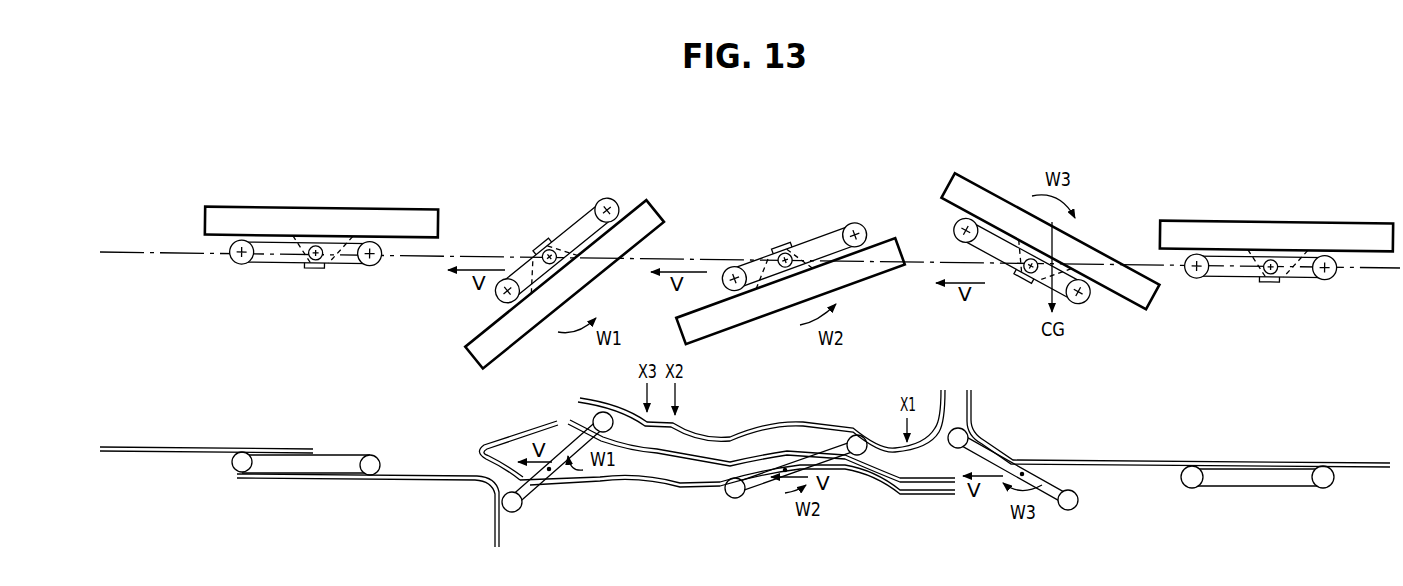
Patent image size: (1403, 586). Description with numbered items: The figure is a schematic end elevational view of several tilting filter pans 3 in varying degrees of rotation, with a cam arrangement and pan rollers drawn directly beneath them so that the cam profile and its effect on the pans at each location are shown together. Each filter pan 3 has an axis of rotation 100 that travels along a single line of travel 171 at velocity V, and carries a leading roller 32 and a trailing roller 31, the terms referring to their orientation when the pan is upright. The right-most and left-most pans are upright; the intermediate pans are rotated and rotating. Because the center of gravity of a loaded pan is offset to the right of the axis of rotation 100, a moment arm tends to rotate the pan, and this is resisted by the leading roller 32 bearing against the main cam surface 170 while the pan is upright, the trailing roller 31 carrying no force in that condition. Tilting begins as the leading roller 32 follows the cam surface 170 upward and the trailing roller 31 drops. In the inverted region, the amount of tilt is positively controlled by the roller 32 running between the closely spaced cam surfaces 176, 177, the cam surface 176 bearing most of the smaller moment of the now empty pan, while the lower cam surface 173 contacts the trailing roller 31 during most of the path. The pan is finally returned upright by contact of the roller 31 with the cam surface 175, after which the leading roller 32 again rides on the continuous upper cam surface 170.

The tilting filter pan 3 is at (244, 208).
The trailing roller 31 is at (373, 265).
The leading roller 32 is at (248, 261).
The axis of rotation 100 is at (551, 242).
The main cam surface 170 is at (164, 452).
The line of travel 171 is at (130, 250).
The lower cam surface 173 is at (651, 489).
The cam surface 175 is at (390, 477).
The cam surface 176 is at (780, 432).
The cam surface 177 is at (685, 438).